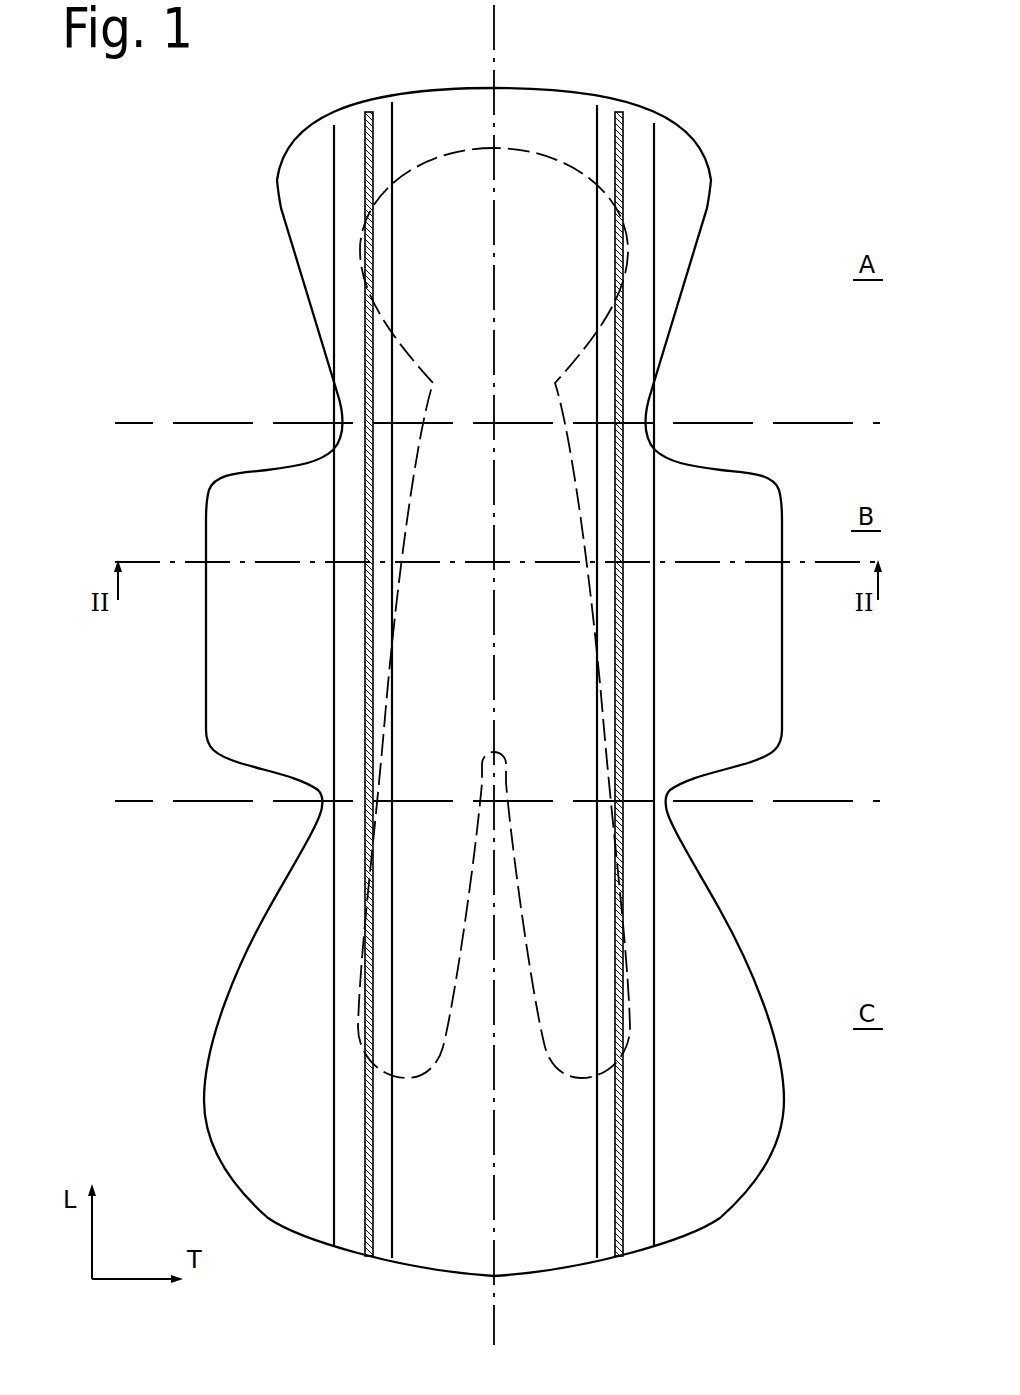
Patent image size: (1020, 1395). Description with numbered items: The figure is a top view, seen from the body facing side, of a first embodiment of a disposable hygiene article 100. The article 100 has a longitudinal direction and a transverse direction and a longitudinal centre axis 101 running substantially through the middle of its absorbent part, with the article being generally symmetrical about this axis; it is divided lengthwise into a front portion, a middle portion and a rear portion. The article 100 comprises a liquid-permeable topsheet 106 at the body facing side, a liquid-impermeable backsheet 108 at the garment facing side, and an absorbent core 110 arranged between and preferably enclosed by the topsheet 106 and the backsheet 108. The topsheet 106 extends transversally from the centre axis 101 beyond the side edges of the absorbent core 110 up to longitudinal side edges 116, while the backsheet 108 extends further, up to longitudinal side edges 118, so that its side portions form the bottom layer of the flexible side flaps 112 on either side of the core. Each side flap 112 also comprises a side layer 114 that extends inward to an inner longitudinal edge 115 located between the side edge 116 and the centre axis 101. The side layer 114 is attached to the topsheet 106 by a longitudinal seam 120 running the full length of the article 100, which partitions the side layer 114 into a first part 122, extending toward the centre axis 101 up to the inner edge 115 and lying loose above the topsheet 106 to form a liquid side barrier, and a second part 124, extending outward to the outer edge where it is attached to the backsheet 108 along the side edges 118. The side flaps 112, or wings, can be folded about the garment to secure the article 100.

The disposable hygiene article 100 is at (724, 212).
The longitudinal centre axis 101 is at (495, 1282).
The liquid-permeable topsheet 106 is at (533, 115).
The liquid-impermeable backsheet 108 is at (703, 152).
The absorbent core 110 is at (470, 148).
The flexible side flaps 112 is at (237, 510).
The side layer 114 is at (250, 648).
The inner longitudinal edge 115 is at (393, 137).
The longitudinal side edges 116 is at (335, 283).
The longitudinal side edges 118 is at (207, 688).
The seam 120 is at (372, 663).
The first part 122 is at (378, 722).
The second part 124 is at (350, 695).